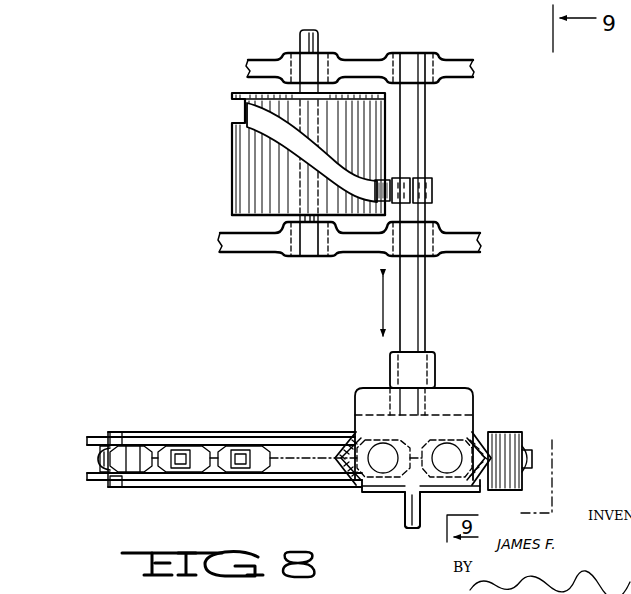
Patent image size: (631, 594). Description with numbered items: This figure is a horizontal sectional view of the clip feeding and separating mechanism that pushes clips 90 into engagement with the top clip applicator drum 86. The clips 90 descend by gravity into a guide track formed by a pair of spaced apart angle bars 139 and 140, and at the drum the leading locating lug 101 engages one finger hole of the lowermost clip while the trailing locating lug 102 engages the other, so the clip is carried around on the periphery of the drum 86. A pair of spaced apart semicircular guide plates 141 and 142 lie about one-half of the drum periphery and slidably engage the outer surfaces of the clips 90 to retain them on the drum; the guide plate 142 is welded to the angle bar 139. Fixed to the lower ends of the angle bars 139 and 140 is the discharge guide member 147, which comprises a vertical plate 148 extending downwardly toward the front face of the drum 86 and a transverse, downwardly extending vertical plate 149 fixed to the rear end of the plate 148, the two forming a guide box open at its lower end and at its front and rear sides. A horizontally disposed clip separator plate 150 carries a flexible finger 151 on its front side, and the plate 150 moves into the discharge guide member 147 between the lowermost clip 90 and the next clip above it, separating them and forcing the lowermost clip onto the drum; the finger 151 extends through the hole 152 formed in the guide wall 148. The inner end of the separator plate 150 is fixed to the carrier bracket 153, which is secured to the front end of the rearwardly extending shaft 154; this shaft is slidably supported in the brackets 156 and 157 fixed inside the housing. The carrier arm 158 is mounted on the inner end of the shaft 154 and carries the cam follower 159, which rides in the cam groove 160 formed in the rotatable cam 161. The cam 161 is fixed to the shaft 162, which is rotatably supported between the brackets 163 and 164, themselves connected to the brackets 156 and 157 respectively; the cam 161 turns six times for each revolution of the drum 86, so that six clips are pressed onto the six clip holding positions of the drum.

The top clip applicator drum 86 is at (218, 431).
The clip 90 is at (247, 442).
The locating lug 101 is at (182, 468).
The locating lug 102 is at (100, 460).
The angle bar 139 is at (345, 446).
The angle bar 140 is at (492, 446).
The guide plate 141 is at (138, 442).
The guide plate 142 is at (125, 481).
The discharge guide member 147 is at (482, 489).
The vertical plate 148 is at (403, 500).
The transverse vertical plate 149 is at (521, 440).
The clip separator plate 150 is at (463, 397).
The flexible finger 151 is at (419, 530).
The hole 152 is at (410, 528).
The carrier bracket 153 is at (440, 356).
The shaft 154 is at (418, 316).
The bracket 156 is at (471, 240).
The bracket 157 is at (468, 68).
The carrier arm 158 is at (433, 190).
The cam follower 159 is at (386, 183).
The cam groove 160 is at (258, 122).
The cam 161 is at (232, 158).
The shaft 162 is at (315, 43).
The bracket 163 is at (253, 243).
The bracket 164 is at (263, 63).